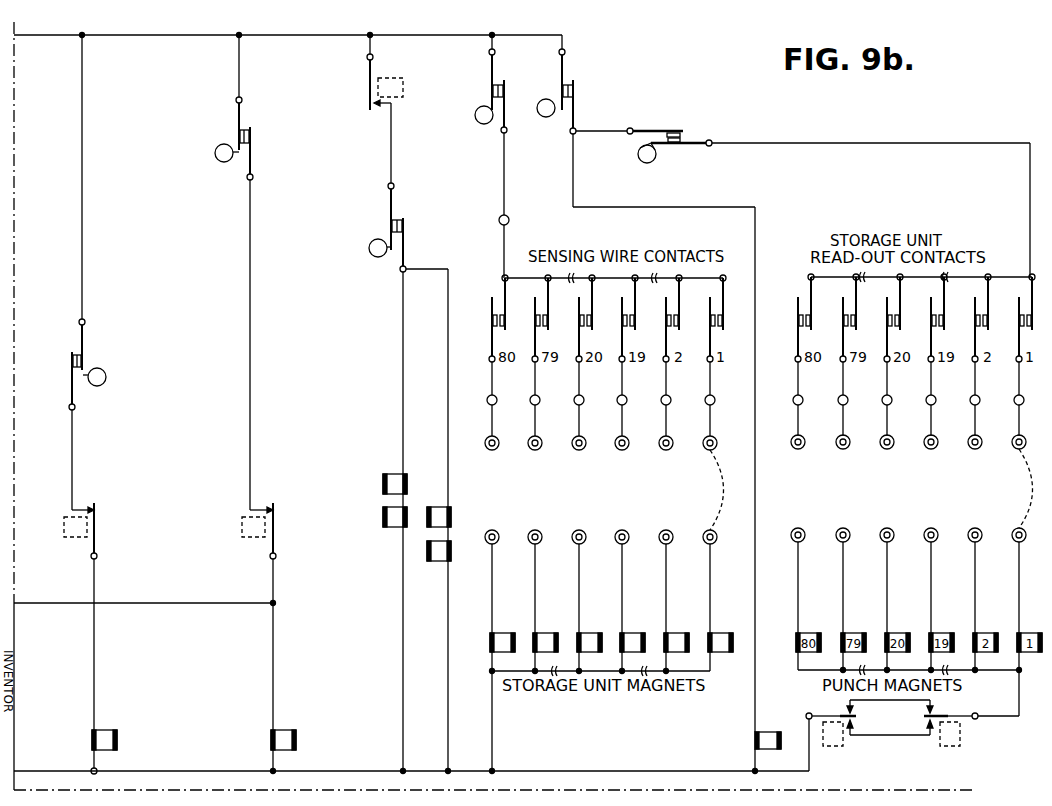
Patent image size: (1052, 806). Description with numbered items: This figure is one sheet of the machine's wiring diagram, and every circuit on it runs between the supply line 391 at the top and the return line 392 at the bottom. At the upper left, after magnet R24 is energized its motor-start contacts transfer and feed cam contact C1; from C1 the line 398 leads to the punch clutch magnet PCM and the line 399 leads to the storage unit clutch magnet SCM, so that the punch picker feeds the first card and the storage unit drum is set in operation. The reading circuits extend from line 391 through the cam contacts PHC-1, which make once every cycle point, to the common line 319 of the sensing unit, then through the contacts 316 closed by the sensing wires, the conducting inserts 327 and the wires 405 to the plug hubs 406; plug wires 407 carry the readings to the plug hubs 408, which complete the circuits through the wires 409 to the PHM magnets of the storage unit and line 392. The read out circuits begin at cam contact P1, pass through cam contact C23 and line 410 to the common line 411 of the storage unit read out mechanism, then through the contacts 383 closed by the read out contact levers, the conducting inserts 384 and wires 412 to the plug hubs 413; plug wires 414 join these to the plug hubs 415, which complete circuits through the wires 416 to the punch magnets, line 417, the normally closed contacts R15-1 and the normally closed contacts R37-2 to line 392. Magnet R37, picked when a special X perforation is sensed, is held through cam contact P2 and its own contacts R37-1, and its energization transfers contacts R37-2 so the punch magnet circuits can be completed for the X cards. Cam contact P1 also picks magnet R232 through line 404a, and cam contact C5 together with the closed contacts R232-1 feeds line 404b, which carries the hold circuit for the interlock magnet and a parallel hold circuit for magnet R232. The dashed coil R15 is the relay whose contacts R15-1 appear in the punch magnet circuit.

The line 391 is at (161, 37).
The line 392 is at (590, 771).
The line 398 is at (404, 290).
The line 399 is at (426, 268).
The line 404a is at (700, 207).
The line 404b is at (178, 603).
The wires 405 is at (490, 424).
The plug hubs 406 is at (489, 450).
The plug wires 407 is at (722, 480).
The plug hubs 408 is at (706, 529).
The wires 409 is at (711, 572).
The line 410 is at (836, 143).
The common line 411 is at (1007, 273).
The wires 412 is at (796, 424).
The plug hubs 413 is at (1013, 450).
The plug wires 414 is at (1034, 478).
The plug hubs 415 is at (1014, 527).
The wires 416 is at (1018, 570).
The line 417 is at (998, 717).
The contacts 316 is at (497, 296).
The common line 319 is at (510, 270).
The conducting inserts 327 is at (488, 396).
The contacts 383 is at (803, 297).
The conducting inserts 384 is at (794, 396).
The cam contact C5 is at (244, 128).
The cam contact C1 is at (398, 218).
The cam contact C23 is at (695, 133).
The magnet R24 is at (368, 148).
The cam contacts PHC-1 is at (500, 82).
The cam contact P1 is at (574, 80).
The cam contact P2 is at (71, 350).
The contacts R37-1 is at (92, 503).
The magnet R37 is at (74, 539).
The contacts R232-1 is at (271, 503).
The magnet R232 is at (250, 539).
The punch clutch magnet PCM is at (386, 487).
The storage unit clutch magnet SCM is at (436, 561).
The PHM magnets PHM is at (497, 633).
The contacts R37-2 is at (848, 713).
The contacts R15-1 is at (933, 713).
The relay R15 is at (941, 746).